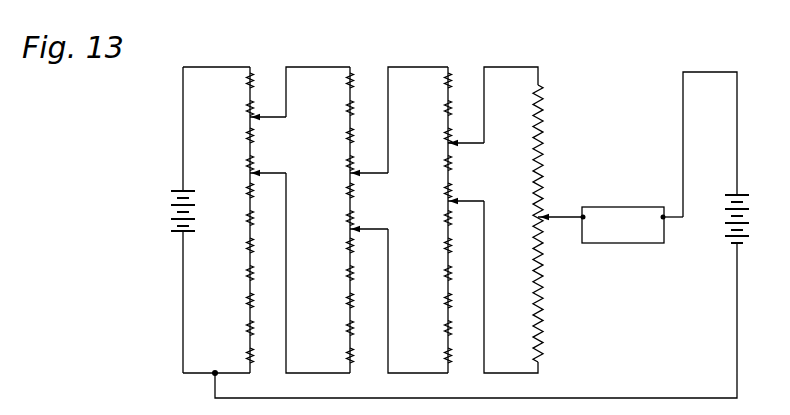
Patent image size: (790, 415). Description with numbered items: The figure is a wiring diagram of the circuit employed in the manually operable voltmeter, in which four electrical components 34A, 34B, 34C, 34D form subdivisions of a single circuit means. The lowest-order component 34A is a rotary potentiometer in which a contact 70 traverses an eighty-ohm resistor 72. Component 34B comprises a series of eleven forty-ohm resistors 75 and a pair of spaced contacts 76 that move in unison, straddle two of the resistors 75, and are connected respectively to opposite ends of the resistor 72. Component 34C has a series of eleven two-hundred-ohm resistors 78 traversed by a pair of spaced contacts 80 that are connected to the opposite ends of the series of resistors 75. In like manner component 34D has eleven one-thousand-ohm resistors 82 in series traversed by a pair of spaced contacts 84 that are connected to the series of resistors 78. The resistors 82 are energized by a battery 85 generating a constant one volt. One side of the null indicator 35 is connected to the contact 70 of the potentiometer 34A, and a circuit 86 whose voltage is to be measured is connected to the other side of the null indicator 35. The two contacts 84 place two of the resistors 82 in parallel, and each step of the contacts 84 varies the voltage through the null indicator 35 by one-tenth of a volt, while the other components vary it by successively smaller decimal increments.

The electrical component 34A is at (564, 206).
The electrical component 34B is at (449, 202).
The electrical component 34C is at (353, 202).
The electrical component 34D is at (256, 202).
The null indicator 35 is at (652, 207).
The contact 70 is at (561, 215).
The resistor 72 is at (544, 160).
The resistors 75 is at (447, 328).
The contacts 76 is at (454, 142).
The resistors 78 is at (348, 320).
The contacts 80 is at (358, 171).
The resistors 82 is at (248, 280).
The contacts 84 is at (258, 119).
The battery 85 is at (172, 202).
The circuit 86 is at (735, 245).